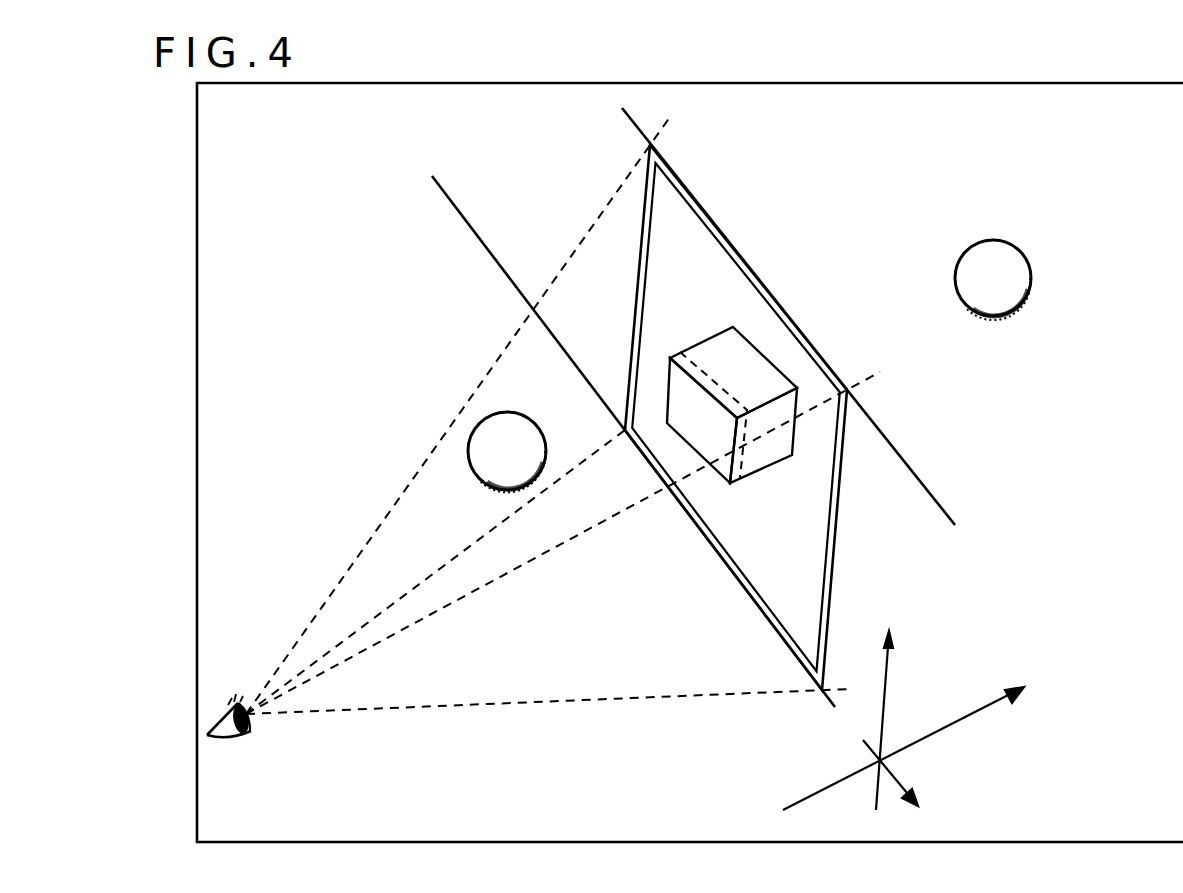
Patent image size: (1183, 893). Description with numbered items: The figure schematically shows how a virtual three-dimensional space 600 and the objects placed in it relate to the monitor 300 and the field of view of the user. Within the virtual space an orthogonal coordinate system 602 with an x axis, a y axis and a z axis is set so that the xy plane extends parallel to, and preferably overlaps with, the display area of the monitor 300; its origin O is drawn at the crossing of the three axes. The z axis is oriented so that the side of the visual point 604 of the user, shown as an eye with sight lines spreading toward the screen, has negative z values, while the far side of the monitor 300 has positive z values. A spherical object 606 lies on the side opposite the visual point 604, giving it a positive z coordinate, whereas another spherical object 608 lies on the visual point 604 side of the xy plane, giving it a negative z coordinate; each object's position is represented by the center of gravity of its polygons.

The virtual space 600 is at (731, 82).
The monitor 300 is at (750, 268).
The orthogonal coordinate system 602 is at (885, 711).
The visual point 604 is at (225, 738).
The spherical object 606 is at (994, 240).
The spherical object 608 is at (508, 412).